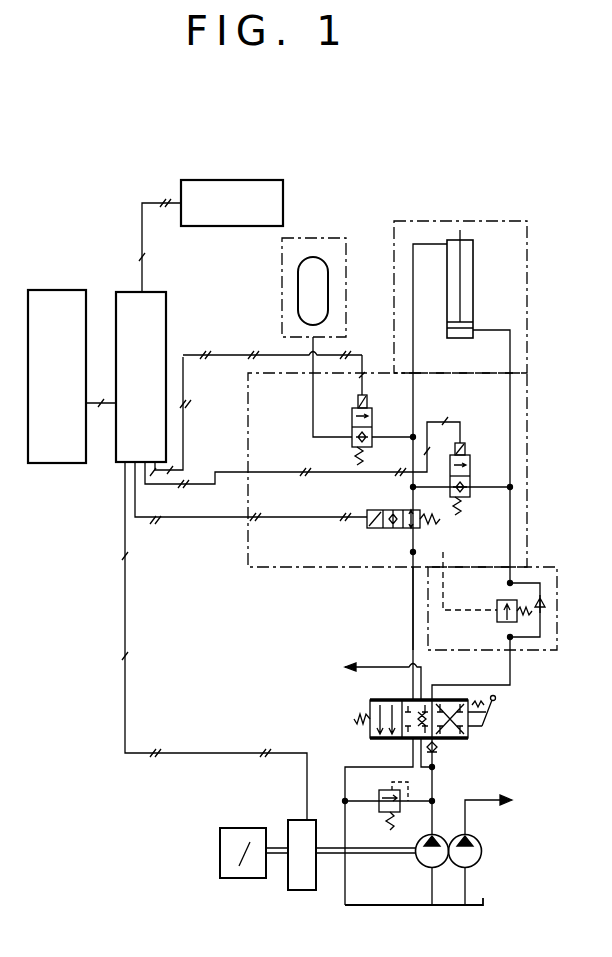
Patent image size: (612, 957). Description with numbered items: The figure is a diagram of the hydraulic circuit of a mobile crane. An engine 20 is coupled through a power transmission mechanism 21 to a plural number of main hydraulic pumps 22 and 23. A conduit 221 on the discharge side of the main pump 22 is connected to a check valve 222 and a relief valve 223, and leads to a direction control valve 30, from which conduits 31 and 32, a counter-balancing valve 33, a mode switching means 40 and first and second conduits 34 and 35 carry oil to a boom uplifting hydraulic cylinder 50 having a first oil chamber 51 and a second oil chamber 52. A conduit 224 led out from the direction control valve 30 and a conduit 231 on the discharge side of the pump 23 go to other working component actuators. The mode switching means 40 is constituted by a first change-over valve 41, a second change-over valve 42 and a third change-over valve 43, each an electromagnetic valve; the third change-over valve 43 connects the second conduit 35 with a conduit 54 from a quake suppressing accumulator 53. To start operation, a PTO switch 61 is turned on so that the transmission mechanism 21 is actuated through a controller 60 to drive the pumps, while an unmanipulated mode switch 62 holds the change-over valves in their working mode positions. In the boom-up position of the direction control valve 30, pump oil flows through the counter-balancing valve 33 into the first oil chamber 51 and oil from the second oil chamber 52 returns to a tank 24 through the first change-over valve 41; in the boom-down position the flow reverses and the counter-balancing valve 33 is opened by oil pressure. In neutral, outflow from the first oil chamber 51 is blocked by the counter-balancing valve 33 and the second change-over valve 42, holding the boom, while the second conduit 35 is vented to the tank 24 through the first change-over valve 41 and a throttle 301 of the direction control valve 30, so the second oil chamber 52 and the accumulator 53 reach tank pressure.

The engine 20 is at (220, 840).
The transmission mechanism 21 is at (290, 822).
The main hydraulic pump 22 is at (418, 862).
The main hydraulic pump 23 is at (482, 858).
The tank 24 is at (485, 902).
The direction control valve 30 is at (468, 736).
The conduit 31 is at (510, 668).
The conduit 32 is at (413, 588).
The counter-balancing valve 33 is at (555, 567).
The first conduit 34 is at (510, 392).
The second conduit 35 is at (413, 398).
The mode switching means 40 is at (527, 487).
The first change-over valve 41 is at (385, 512).
The second change-over valve 42 is at (470, 455).
The third change-over valve 43 is at (352, 410).
The boom uplifting hydraulic cylinder 50 is at (527, 323).
The first oil chamber 51 is at (450, 332).
The second oil chamber 52 is at (470, 282).
The quake suppressing accumulator 53 is at (346, 262).
The conduit 54 is at (312, 403).
The controller 60 is at (124, 290).
The transmission switch (PTO switch) 61 is at (181, 182).
The mode switch 62 is at (57, 290).
The conduit 221 is at (432, 790).
The check valve 222 is at (440, 753).
The relief valve 223 is at (380, 812).
The conduit 224 is at (372, 665).
The conduit 231 is at (493, 803).
The throttle 301 is at (380, 700).